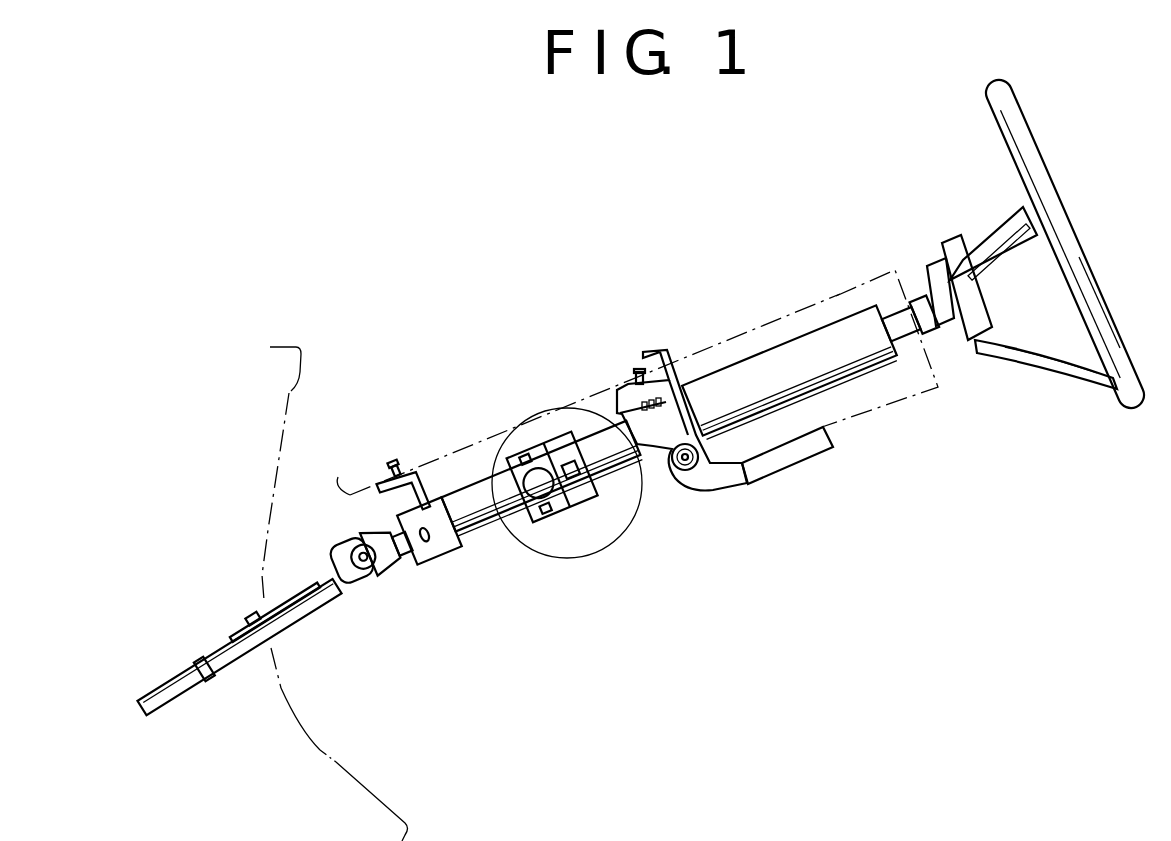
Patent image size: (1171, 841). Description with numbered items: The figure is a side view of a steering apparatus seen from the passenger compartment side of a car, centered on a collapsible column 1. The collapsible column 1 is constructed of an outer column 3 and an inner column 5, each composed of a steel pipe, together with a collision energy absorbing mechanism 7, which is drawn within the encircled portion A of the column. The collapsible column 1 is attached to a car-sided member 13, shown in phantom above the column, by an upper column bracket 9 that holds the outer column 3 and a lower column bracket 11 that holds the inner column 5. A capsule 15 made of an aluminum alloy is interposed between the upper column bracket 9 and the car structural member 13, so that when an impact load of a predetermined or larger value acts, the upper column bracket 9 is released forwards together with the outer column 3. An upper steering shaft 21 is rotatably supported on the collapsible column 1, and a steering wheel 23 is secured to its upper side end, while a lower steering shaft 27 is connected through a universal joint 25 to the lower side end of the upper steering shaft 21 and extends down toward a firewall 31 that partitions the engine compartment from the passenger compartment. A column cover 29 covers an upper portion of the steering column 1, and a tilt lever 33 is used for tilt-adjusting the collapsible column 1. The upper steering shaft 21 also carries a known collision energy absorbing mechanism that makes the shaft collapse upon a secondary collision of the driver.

The collapsible column 1 is at (684, 449).
The outer column 3 is at (850, 378).
The inner column 5 is at (480, 527).
The collision energy absorbing mechanism 7 is at (582, 520).
The upper column bracket 9 is at (685, 475).
The lower column bracket 11 is at (433, 563).
The car-sided member 13 is at (467, 463).
The capsule 15 is at (768, 438).
The upper steering shaft 21 is at (928, 332).
The steering wheel 23 is at (1058, 225).
The universal joint 25 is at (361, 587).
The lower steering shaft 27 is at (221, 671).
The column cover 29 is at (873, 277).
The firewall 31 is at (322, 742).
The tilt lever 33 is at (767, 467).
The portion A is at (562, 558).